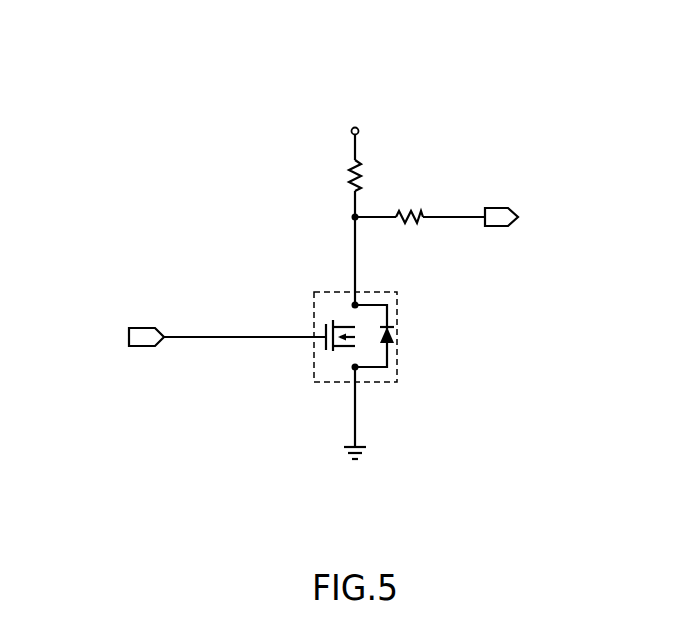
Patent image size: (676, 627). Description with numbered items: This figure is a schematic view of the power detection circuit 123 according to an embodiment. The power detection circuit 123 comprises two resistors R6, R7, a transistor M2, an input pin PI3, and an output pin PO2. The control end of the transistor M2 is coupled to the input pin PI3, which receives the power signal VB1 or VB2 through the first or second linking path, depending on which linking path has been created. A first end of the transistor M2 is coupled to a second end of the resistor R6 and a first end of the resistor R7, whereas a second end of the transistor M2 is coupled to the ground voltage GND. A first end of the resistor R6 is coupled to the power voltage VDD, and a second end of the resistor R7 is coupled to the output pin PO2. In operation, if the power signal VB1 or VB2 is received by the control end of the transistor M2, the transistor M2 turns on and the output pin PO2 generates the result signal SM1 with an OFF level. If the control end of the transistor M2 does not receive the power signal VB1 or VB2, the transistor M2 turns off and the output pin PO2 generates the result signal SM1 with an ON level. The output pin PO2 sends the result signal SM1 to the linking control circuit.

The power detection circuit 123 is at (102, 128).
The input pin PI3 is at (144, 327).
The output pin PO2 is at (501, 207).
The transistor M2 is at (384, 291).
The resistor R6 is at (368, 188).
The resistor R7 is at (420, 206).
The power voltage VDD is at (354, 135).
The ground voltage GND is at (355, 425).
The result signal SM1 is at (540, 217).